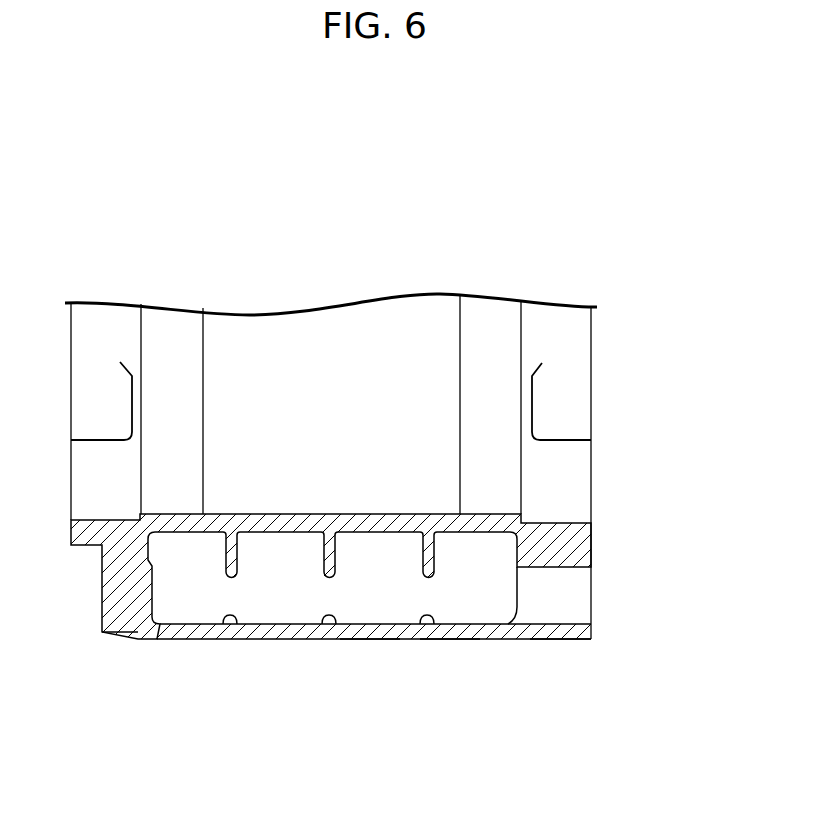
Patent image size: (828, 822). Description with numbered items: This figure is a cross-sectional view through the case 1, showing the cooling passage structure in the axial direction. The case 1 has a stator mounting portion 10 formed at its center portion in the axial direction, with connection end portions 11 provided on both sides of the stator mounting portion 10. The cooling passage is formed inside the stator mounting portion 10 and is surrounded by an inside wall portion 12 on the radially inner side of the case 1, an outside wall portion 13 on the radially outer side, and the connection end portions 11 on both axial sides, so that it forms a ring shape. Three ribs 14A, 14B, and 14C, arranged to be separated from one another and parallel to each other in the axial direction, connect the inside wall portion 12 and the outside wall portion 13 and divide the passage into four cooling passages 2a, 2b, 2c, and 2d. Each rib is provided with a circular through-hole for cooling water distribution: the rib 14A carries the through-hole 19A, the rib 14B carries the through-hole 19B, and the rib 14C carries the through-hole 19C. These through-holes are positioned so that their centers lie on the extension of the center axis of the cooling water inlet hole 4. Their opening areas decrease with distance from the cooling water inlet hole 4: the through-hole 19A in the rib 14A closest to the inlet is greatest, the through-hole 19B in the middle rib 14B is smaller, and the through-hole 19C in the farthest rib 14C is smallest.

The case 1 is at (592, 470).
The cooling water inlet hole 4 is at (563, 625).
The stator mounting portion 10 is at (450, 640).
The connection end portions 11 is at (125, 639).
The inside wall portion 12 is at (358, 513).
The outside wall portion 13 is at (367, 640).
The rib 14A is at (422, 556).
The rib 14B is at (334, 560).
The rib 14C is at (237, 558).
The cooling passage 2a is at (482, 597).
The cooling passage 2b is at (362, 597).
The cooling passage 2c is at (273, 598).
The cooling passage 2d is at (195, 597).
The through-hole 19A is at (427, 617).
The through-hole 19B is at (323, 613).
The through-hole 19C is at (233, 613).